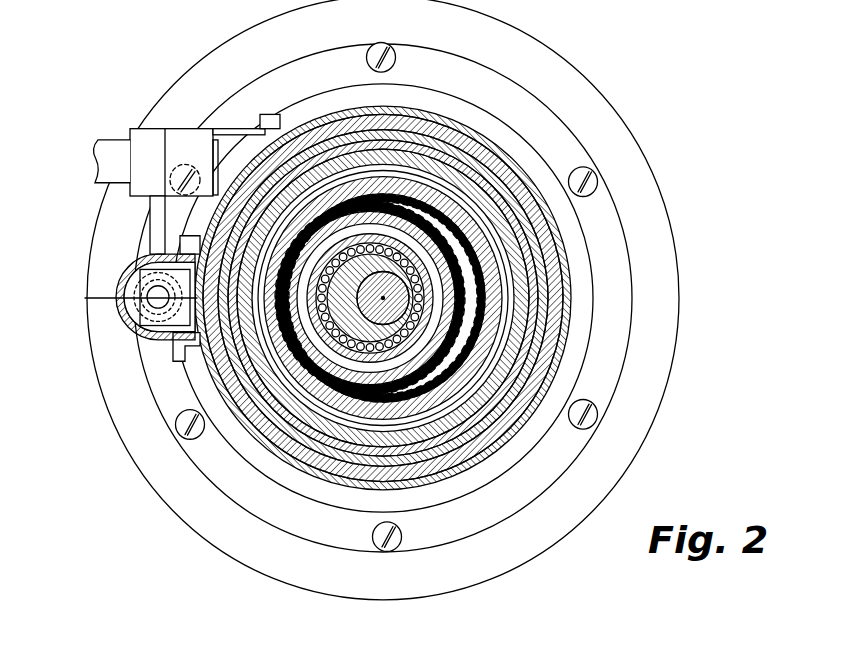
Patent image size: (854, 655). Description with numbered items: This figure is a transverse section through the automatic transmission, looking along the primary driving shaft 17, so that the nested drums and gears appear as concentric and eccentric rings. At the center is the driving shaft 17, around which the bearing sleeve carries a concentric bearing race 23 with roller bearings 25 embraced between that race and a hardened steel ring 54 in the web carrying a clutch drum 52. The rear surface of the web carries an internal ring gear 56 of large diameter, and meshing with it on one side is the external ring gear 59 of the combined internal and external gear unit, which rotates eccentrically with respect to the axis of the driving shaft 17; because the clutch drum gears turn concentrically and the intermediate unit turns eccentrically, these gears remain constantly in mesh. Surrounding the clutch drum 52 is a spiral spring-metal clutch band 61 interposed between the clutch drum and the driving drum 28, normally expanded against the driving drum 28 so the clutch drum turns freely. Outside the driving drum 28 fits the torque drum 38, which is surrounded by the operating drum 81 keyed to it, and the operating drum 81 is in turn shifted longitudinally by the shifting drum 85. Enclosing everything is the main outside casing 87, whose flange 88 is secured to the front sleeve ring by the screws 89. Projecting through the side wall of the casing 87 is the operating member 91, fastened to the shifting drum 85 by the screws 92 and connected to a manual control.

The primary driving shaft 17 is at (370, 297).
The concentric roller bearing races 23 is at (370, 298).
The roller bearings 25 is at (370, 298).
The driving drum 28 is at (383, 298).
The torque drum 38 is at (383, 298).
The clutch drum 52 is at (383, 298).
The hardened steel ring 54 is at (370, 298).
The internal ring gear 56 is at (383, 298).
The external ring gear 59 is at (370, 298).
The clutch band 61 is at (383, 298).
The operating drum 81 is at (383, 298).
The shifting drum 85 is at (383, 297).
The main outside casing 87 is at (383, 298).
The flange 88 is at (383, 300).
The screws 89 is at (387, 296).
The operating member 91 is at (141, 297).
The screws 92 is at (186, 237).